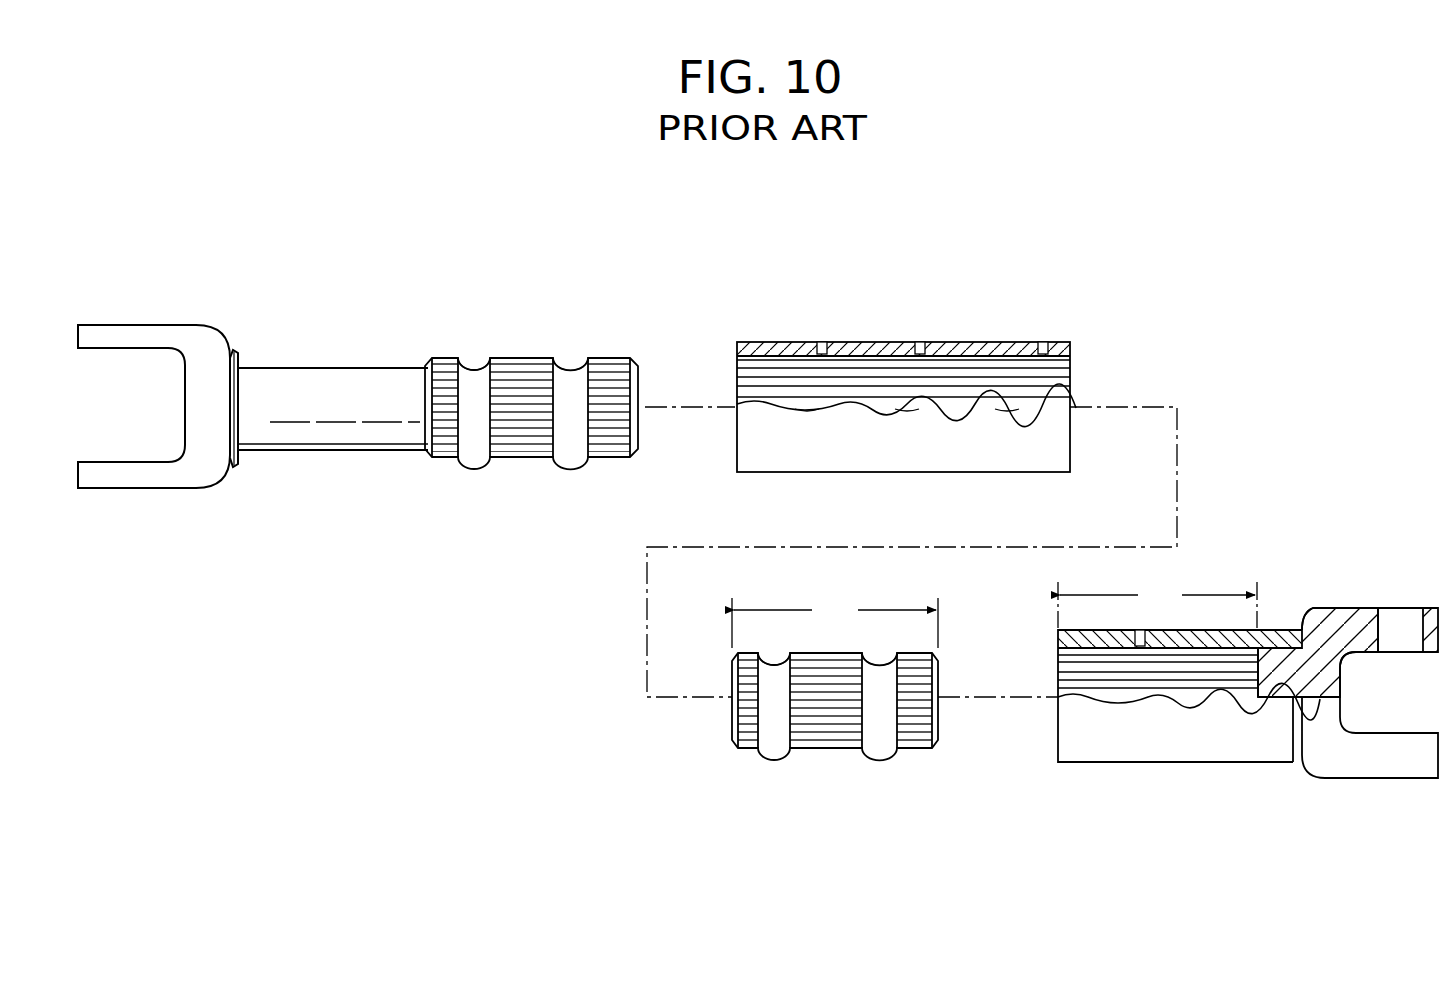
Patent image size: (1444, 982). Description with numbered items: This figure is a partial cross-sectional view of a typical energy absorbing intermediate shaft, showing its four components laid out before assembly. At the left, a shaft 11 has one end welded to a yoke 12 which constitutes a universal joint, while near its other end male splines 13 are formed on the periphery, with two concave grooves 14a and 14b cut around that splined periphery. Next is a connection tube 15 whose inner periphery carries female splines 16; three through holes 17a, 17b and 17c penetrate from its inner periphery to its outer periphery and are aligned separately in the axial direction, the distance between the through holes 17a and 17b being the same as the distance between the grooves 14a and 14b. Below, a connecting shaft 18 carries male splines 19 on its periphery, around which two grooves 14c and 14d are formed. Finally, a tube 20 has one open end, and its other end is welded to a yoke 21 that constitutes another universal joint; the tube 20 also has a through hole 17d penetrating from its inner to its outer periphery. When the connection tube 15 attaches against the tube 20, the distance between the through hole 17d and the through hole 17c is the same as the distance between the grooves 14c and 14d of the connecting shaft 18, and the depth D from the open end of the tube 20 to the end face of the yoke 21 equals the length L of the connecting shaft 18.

The shaft 11 is at (343, 365).
The yoke 12 is at (170, 335).
The male splines 13 is at (533, 452).
The concave groove 14a is at (474, 369).
The concave groove 14b is at (572, 369).
The groove 14c is at (774, 745).
The groove 14d is at (880, 745).
The connection tube 15 is at (882, 420).
The female splines 16 is at (1058, 385).
The through hole 17a is at (822, 344).
The through hole 17b is at (920, 344).
The through hole 17c is at (1043, 344).
The through hole 17d is at (1140, 647).
The connecting shaft 18 is at (730, 731).
The male splines 19 is at (826, 750).
The tube 20 is at (1207, 765).
The yoke 21 is at (1338, 610).